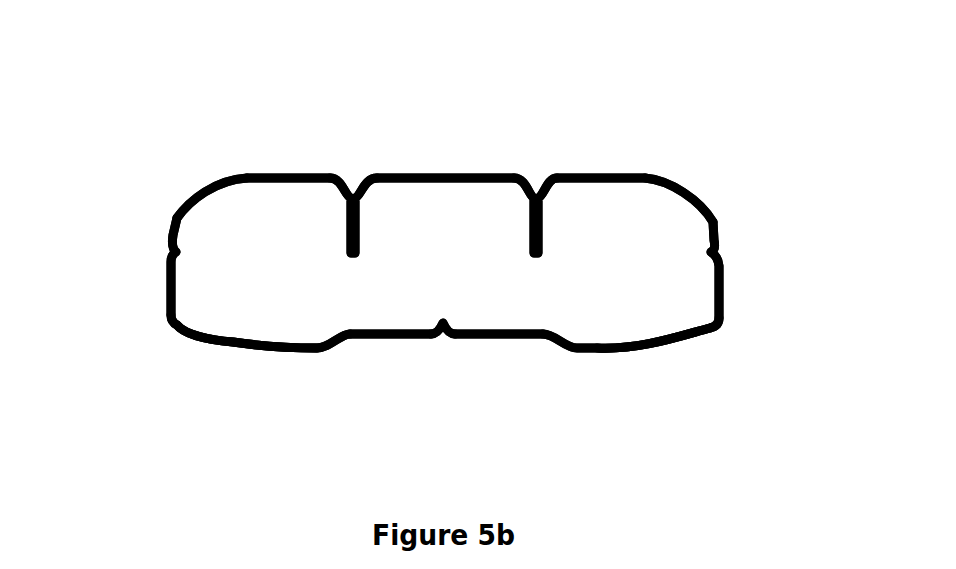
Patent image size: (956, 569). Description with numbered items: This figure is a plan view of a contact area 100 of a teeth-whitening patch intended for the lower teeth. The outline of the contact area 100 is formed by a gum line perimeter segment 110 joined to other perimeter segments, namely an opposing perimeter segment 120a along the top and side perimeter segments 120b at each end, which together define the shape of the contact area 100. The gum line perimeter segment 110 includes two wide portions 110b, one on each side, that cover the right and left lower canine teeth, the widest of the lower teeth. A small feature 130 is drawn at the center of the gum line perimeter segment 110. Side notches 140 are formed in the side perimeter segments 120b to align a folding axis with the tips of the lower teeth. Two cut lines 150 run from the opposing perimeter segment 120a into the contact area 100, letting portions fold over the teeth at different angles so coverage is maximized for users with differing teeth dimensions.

The contact area 100 is at (190, 138).
The gum line perimeter segment 110 is at (410, 342).
The wide portion 110b is at (247, 350).
The opposing perimeter segment 120a is at (310, 172).
The side perimeter segments 120b is at (177, 210).
The bottom protrusion 130 is at (442, 340).
The side notches 140 is at (172, 254).
The cut line 150 is at (347, 220).